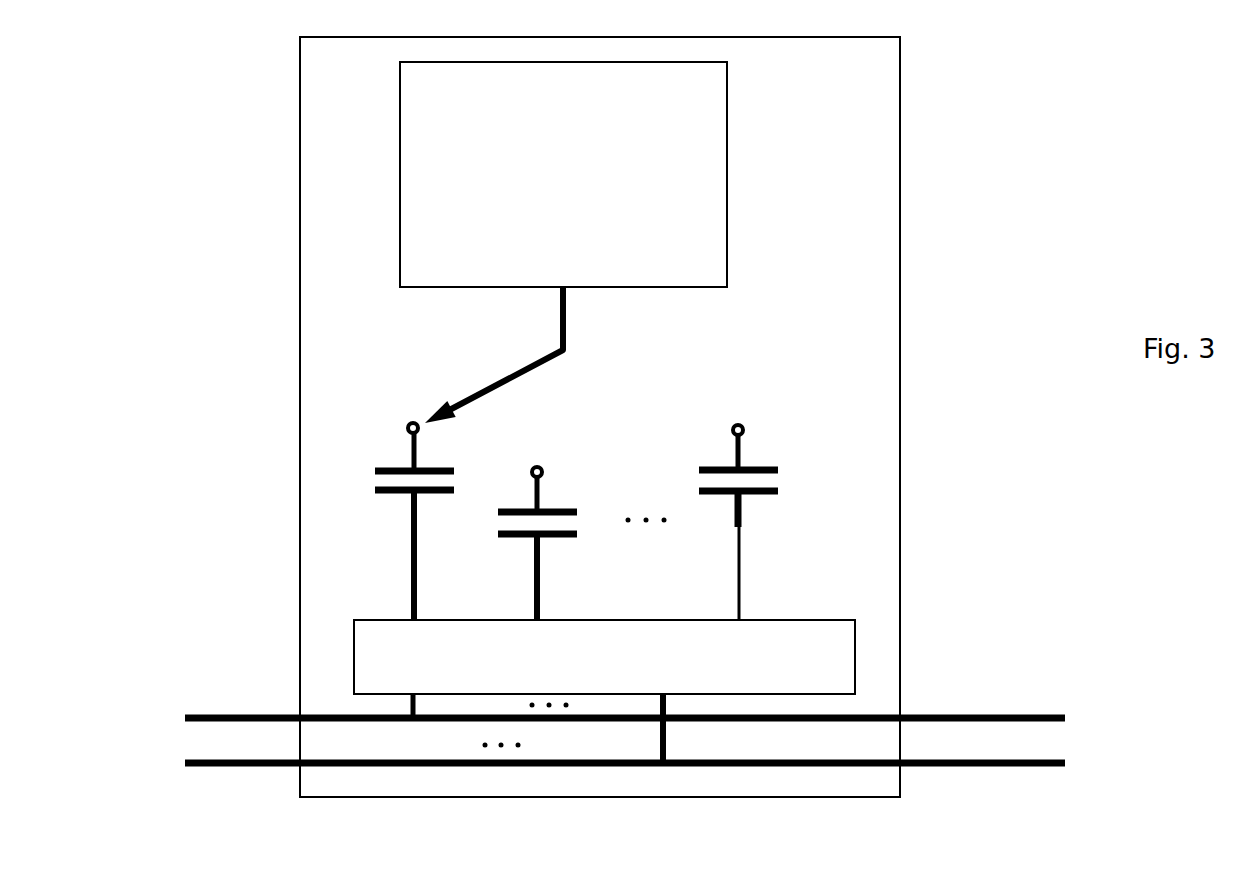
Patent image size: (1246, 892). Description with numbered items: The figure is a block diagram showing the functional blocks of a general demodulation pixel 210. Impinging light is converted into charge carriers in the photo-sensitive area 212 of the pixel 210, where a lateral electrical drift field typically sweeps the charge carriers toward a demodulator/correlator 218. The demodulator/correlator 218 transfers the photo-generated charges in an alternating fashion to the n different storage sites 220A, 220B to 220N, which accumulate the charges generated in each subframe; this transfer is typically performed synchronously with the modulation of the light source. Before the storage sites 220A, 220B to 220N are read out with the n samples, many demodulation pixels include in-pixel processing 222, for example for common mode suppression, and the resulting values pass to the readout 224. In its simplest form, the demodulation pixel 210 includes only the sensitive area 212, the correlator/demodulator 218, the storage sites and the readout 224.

The demodulation pixel 210 is at (918, 154).
The photo-sensitive area 212 is at (563, 174).
The demodulator/correlator 218 is at (522, 352).
The storage site 220A is at (390, 498).
The storage site 220B is at (503, 525).
The storage site 220N is at (773, 477).
The in-pixel processing 222 is at (604, 657).
The readout 224 is at (962, 729).